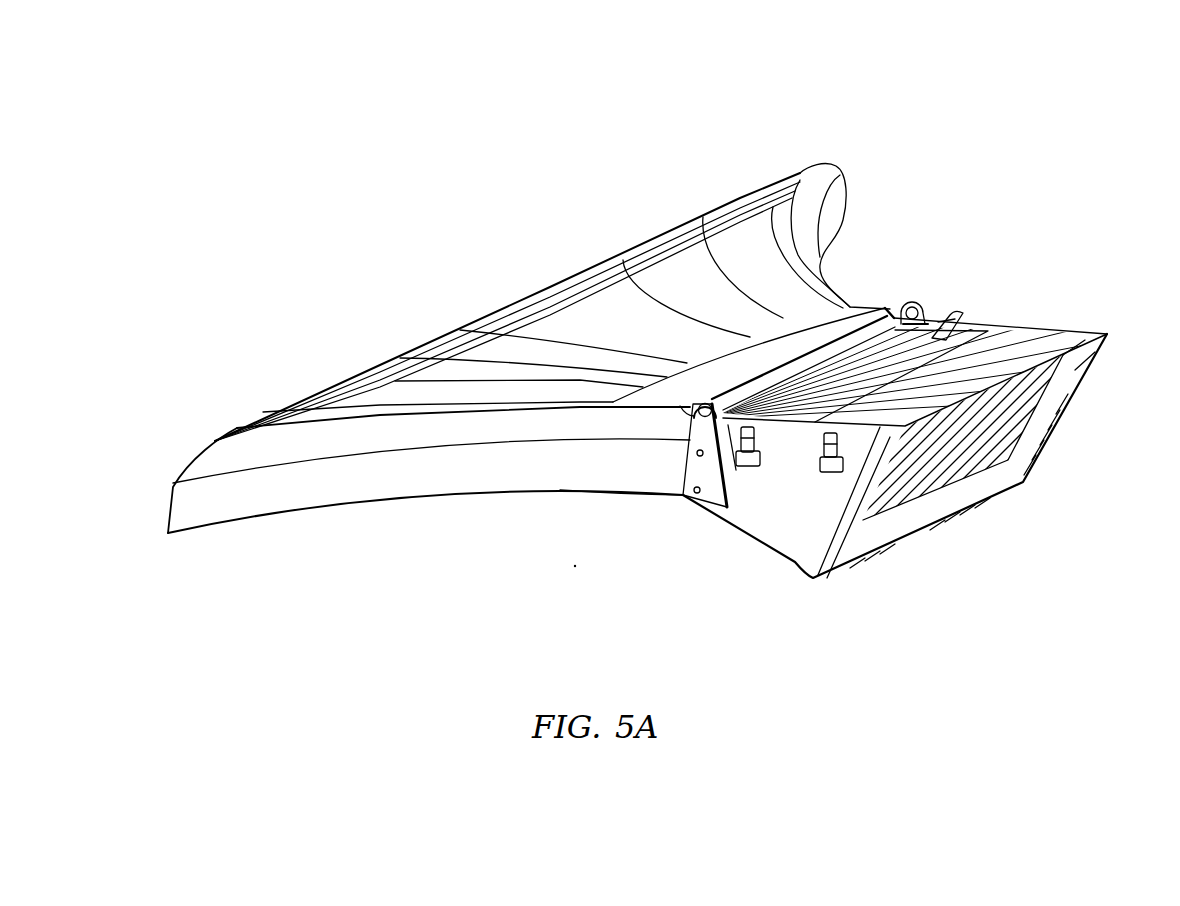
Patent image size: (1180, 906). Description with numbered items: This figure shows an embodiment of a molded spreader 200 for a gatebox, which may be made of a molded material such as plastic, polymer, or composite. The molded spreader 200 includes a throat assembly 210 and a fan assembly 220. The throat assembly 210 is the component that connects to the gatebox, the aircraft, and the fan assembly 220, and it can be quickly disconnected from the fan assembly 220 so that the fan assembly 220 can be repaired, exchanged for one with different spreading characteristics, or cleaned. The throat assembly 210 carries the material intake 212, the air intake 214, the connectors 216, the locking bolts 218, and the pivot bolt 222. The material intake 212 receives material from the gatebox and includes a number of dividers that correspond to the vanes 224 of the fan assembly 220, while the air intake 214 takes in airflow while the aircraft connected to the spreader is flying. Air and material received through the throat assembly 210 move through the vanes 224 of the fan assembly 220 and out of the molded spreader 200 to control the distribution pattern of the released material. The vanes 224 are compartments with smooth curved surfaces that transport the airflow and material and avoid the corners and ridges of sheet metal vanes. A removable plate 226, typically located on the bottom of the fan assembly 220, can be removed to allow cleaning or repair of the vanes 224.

The molded spreader 200 is at (1076, 80).
The throat assembly 210 is at (1043, 328).
The material intake 212 is at (957, 312).
The air intake 214 is at (983, 450).
The connectors 216 is at (830, 474).
The locking bolts 218 is at (697, 490).
The fan assembly 220 is at (273, 513).
The pivot bolt 222 is at (680, 405).
The vanes 224 is at (377, 390).
The removable plate 226 is at (643, 495).